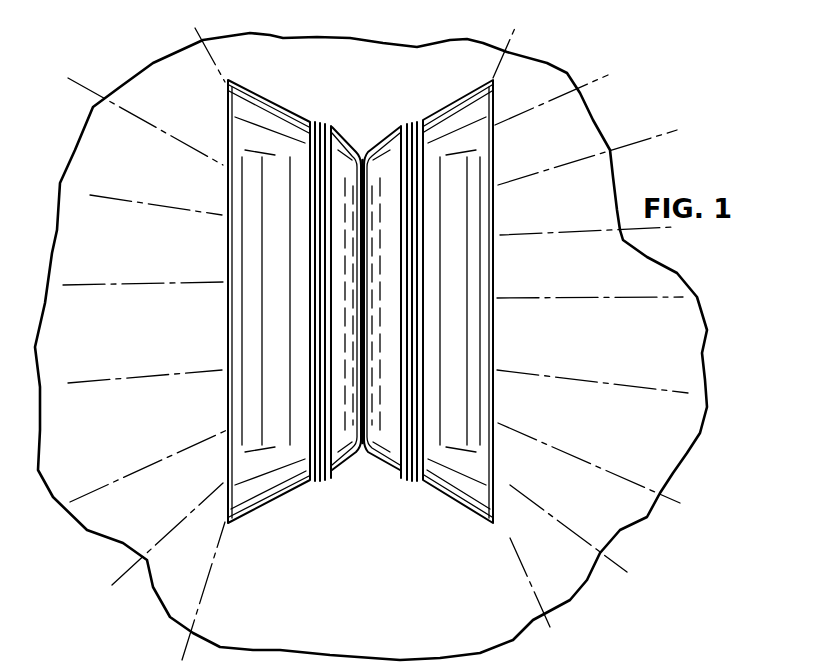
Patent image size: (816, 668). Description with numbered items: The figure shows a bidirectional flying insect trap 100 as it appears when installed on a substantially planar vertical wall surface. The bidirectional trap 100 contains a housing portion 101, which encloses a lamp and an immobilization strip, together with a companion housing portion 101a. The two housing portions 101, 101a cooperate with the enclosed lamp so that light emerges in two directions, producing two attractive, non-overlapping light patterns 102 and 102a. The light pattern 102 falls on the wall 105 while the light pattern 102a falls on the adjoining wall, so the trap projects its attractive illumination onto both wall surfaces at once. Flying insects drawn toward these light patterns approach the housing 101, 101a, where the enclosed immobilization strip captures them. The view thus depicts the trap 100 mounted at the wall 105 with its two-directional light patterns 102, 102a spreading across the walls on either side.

The bidirectional trap 100 is at (423, 321).
The housing portion 101 is at (445, 495).
The housing portion 101a is at (270, 505).
The light pattern 102 is at (633, 343).
The light pattern 102a is at (148, 343).
The wall 105 is at (700, 432).